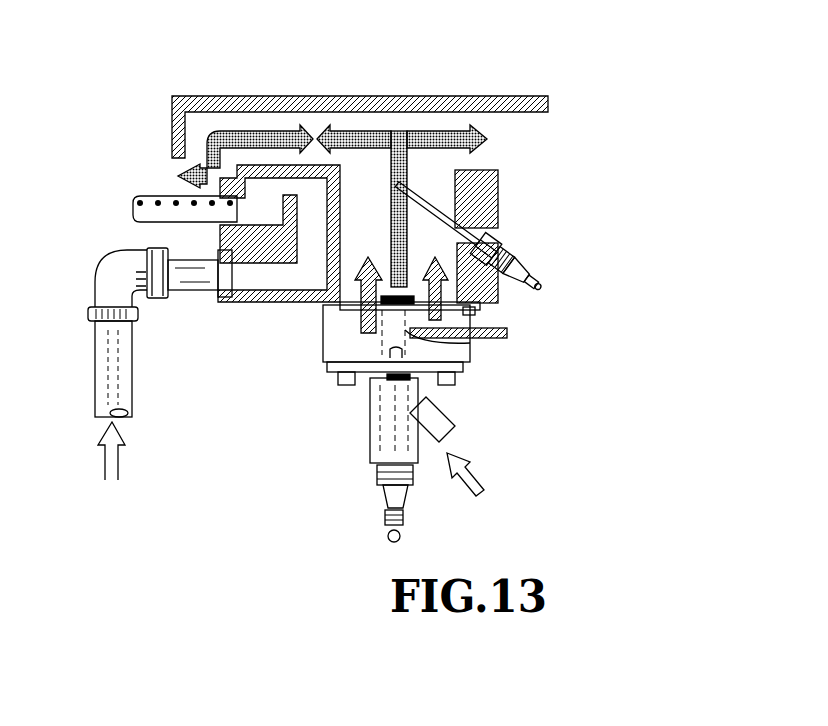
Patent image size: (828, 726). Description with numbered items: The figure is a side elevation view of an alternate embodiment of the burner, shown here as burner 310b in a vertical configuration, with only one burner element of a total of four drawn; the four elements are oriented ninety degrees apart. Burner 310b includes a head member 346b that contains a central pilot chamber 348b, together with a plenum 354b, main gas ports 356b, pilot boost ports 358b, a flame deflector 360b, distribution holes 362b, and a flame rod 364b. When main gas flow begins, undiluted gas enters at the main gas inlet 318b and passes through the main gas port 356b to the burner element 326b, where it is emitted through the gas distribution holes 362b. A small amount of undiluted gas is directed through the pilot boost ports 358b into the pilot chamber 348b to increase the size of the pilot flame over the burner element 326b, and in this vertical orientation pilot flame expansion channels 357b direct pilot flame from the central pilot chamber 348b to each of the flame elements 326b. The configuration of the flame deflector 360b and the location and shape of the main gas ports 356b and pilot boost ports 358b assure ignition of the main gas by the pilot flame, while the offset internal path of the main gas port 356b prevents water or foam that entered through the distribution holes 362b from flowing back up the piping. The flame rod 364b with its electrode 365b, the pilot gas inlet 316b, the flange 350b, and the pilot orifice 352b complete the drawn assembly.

The burner 310b is at (600, 108).
The pilot gas inlet 316b is at (495, 461).
The main gas inlet 318b is at (118, 385).
The burner element 326b is at (160, 198).
The head member 346b is at (303, 307).
The pilot chamber 348b is at (327, 362).
The mounting flange 350b is at (452, 360).
The pilot gas orifice 352b is at (390, 537).
The plenum 354b is at (455, 347).
The main gas port 356b is at (266, 183).
The pilot flame expansion channel 357b is at (300, 116).
The pilot boost port 358b is at (318, 182).
The flame deflector 360b is at (412, 96).
The distribution holes 362b is at (148, 230).
The flame rod 364b is at (517, 243).
The ignition electrode 365b is at (428, 196).